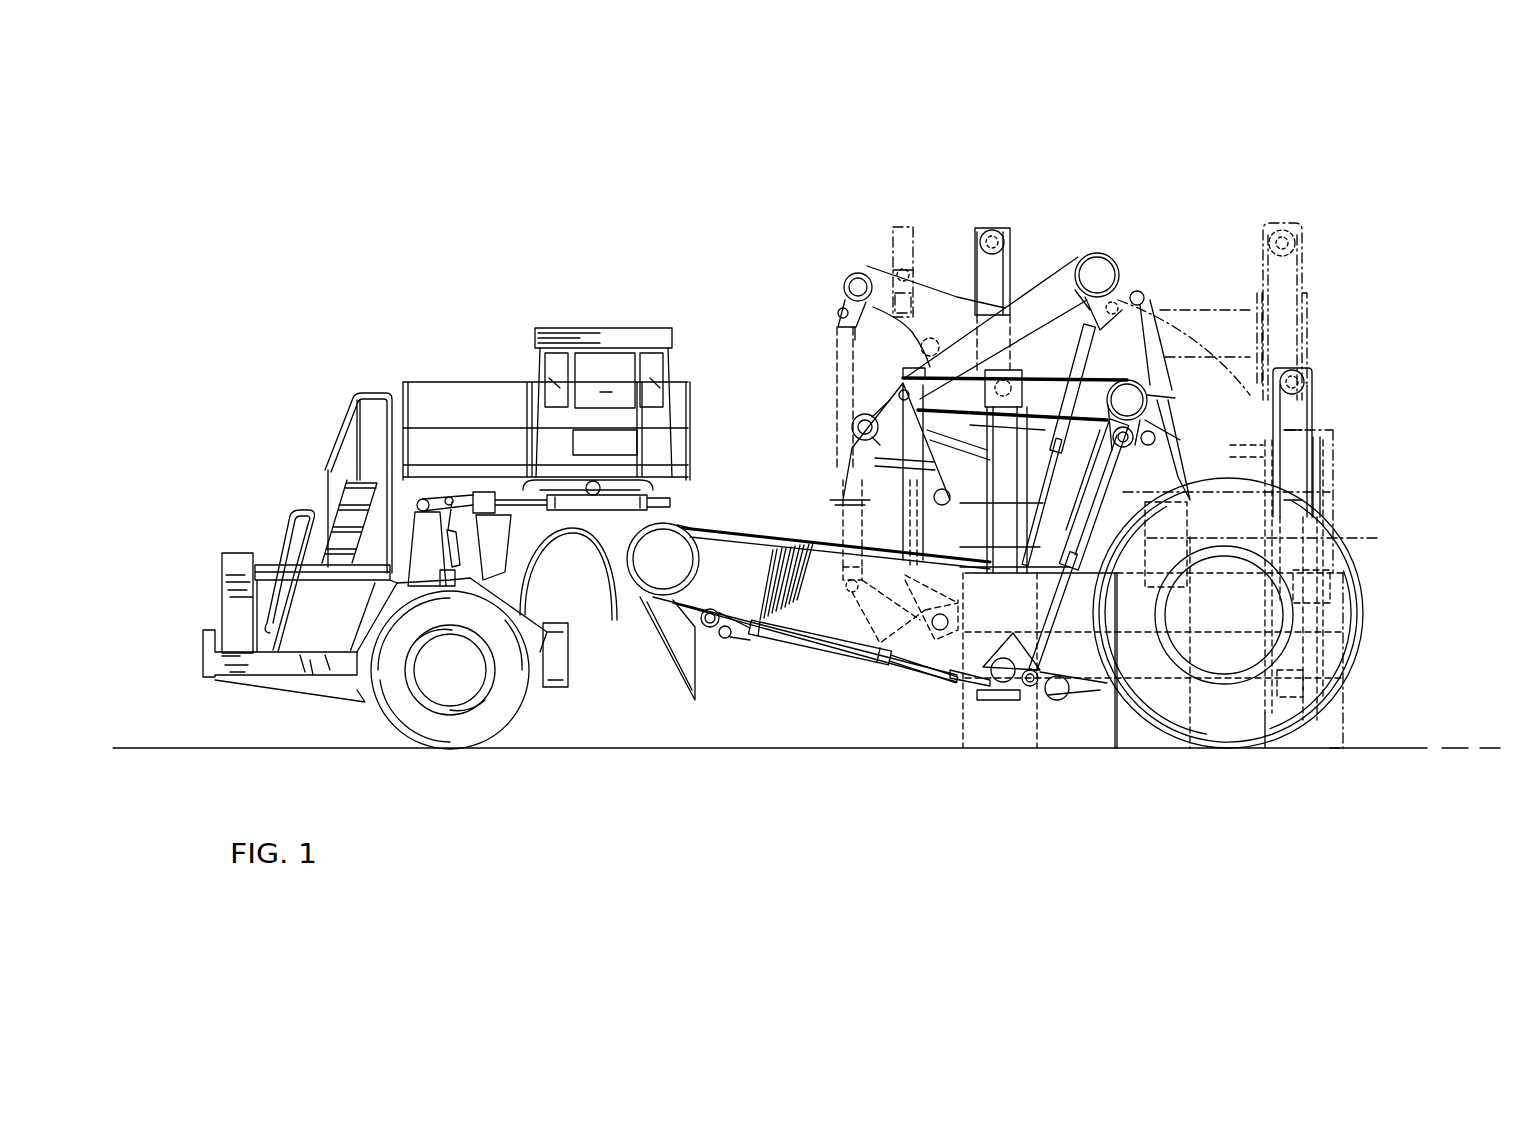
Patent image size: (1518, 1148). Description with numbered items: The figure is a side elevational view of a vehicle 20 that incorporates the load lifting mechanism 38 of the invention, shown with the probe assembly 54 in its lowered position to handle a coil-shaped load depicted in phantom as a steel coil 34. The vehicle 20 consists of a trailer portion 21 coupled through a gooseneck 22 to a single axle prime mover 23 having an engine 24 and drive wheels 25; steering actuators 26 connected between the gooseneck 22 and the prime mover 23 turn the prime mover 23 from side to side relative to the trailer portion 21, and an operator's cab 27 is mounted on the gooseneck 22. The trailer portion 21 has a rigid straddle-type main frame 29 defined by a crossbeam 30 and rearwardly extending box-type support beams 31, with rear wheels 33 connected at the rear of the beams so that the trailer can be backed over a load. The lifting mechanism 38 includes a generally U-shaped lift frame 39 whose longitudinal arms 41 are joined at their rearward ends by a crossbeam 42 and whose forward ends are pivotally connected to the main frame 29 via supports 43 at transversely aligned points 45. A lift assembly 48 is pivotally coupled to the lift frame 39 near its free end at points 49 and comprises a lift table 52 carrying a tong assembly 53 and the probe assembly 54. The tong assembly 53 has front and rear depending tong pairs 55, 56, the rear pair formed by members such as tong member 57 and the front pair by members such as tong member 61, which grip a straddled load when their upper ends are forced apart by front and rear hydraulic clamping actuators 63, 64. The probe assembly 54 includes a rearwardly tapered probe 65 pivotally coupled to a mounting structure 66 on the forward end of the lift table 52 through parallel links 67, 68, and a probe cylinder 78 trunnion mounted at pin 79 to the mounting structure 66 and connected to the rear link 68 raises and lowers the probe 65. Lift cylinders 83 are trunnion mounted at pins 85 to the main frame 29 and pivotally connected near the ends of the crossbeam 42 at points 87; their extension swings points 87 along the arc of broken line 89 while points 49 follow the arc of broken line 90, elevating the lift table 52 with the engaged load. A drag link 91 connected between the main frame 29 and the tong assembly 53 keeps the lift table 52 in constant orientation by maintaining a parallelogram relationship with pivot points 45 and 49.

The vehicle 20 is at (678, 236).
The trailer portion 21 is at (847, 232).
The gooseneck 22 is at (617, 527).
The prime mover 23 is at (497, 306).
The engine 24 is at (265, 567).
The drive wheels 25 is at (502, 713).
The steering actuators 26 is at (567, 503).
The operator's cab 27 is at (590, 333).
The main frame 29 is at (705, 520).
The crossbeam 30 is at (655, 570).
The box-type support beam 31 is at (752, 563).
The rear wheels 33 is at (1213, 730).
The steel coil 34 is at (1320, 728).
The load lifting mechanism 38 is at (1162, 386).
The lift frame 39 is at (1045, 368).
The arm 41 is at (1055, 446).
The crossbeam 42 is at (1180, 398).
The support 43 is at (803, 500).
The pivot point 45 is at (937, 450).
The lift assembly 48 is at (1155, 432).
The pivot point 49 is at (1140, 297).
The lift table 52 is at (1045, 488).
The tong assembly 53 is at (1316, 382).
The probe assembly 54 is at (840, 585).
The front tong pair 55 is at (1000, 430).
The rear tong pair 56 is at (1290, 415).
The tong member 57 is at (1290, 472).
The tong member 61 is at (923, 473).
The front hydraulic clamping actuator 63 is at (1023, 373).
The rear hydraulic clamping actuator 64 is at (1297, 363).
The probe 65 is at (1323, 653).
The mounting structure 66 is at (858, 416).
The link 67 is at (840, 493).
The rear link 68 is at (907, 570).
The probe cylinder and piston combination 78 is at (895, 227).
The pin 79 is at (903, 275).
The lift cylinder 83 is at (1060, 603).
The pin 85 is at (1035, 682).
The pivot point 87 is at (1133, 297).
The broken line arc 89 is at (1147, 333).
The broken line arc 90 is at (1160, 350).
The drag link 91 is at (778, 643).